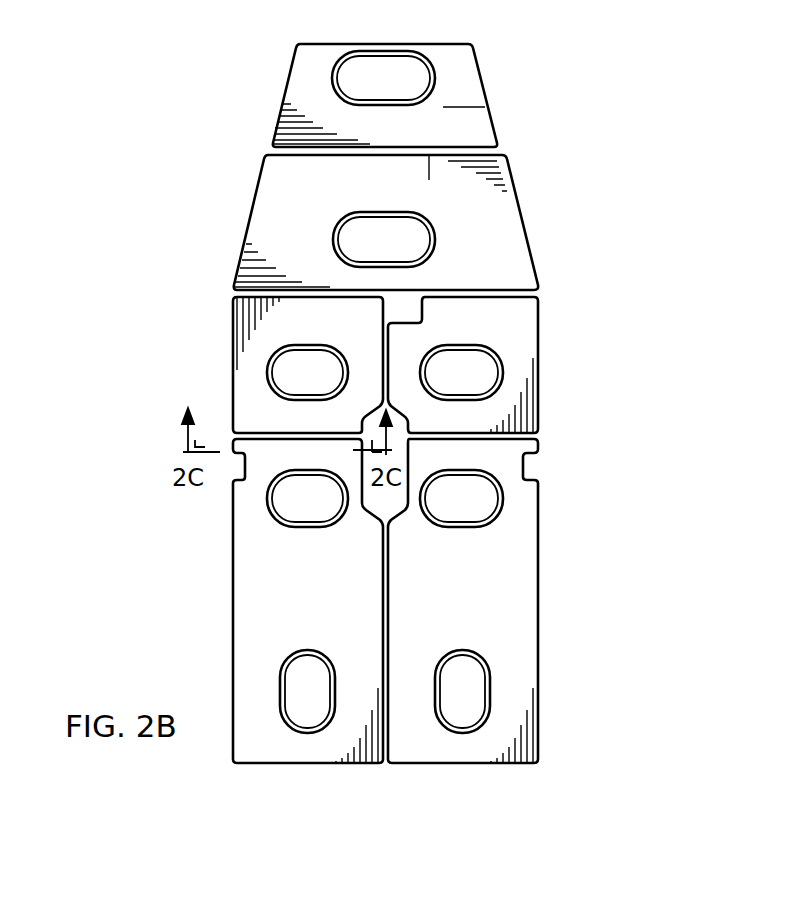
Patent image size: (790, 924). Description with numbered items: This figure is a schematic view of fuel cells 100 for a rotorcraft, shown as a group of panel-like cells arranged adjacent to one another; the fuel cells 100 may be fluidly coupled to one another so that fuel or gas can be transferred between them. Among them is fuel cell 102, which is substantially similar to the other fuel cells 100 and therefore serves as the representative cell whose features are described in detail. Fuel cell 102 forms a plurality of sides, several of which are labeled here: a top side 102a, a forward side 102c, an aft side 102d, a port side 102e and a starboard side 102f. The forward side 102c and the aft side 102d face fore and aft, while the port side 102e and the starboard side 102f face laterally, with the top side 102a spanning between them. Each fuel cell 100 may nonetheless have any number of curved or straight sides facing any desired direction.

The fuel cells 100 is at (158, 134).
The fuel cell 102 is at (233, 578).
The top side 102a is at (335, 610).
The forward side 102c is at (306, 765).
The aft side 102d is at (263, 436).
The port side 102e is at (385, 570).
The starboard side 102f is at (233, 640).